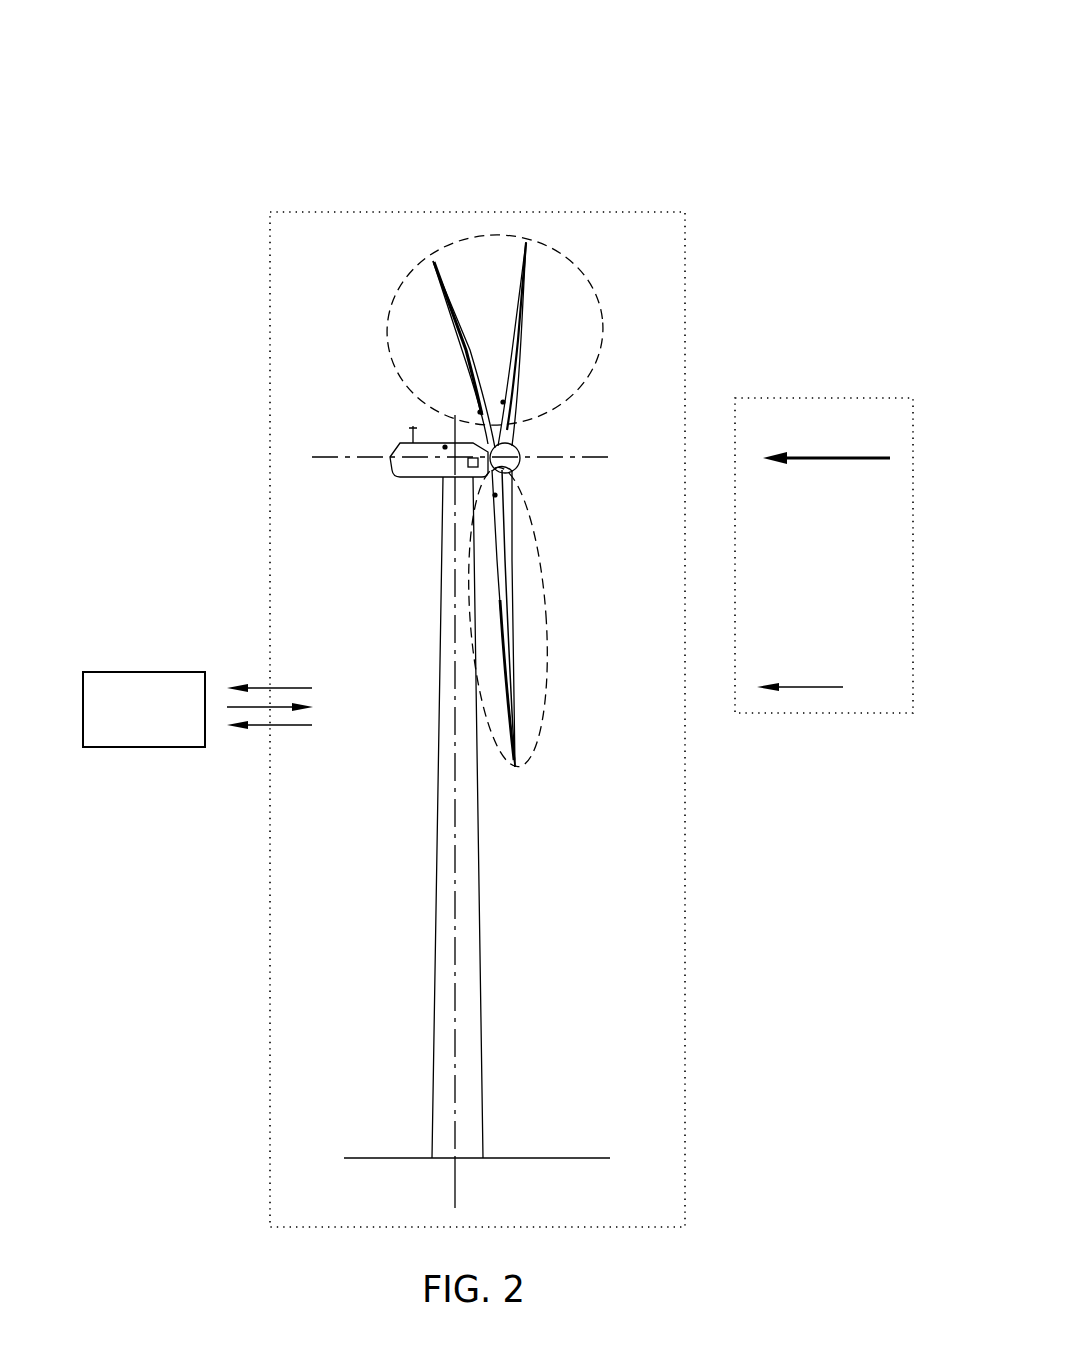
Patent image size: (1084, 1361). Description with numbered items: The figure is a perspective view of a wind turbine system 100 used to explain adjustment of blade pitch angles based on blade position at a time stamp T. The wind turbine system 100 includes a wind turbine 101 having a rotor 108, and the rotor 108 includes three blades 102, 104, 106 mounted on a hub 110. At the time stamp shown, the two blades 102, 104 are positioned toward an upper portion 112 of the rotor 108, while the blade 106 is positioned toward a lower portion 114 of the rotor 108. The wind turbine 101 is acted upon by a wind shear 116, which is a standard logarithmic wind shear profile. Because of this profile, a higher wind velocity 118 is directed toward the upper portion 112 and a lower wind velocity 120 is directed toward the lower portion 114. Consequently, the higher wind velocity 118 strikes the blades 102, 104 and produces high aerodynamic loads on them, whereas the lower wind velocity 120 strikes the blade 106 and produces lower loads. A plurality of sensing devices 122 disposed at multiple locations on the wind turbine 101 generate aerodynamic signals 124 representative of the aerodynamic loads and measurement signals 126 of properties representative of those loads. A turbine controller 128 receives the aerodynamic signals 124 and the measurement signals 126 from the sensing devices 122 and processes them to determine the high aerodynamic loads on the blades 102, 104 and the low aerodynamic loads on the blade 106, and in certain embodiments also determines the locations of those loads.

The wind turbine system 100 is at (748, 67).
The wind turbine 101 is at (687, 888).
The blade 102 is at (525, 317).
The blade 104 is at (458, 320).
The blade 106 is at (505, 548).
The rotor 108 is at (566, 418).
The hub 110 is at (518, 452).
The upper portion 112 is at (592, 282).
The lower portion 114 is at (547, 633).
The wind shear 116 is at (810, 397).
The higher wind velocity 118 is at (798, 457).
The lower wind velocity 120 is at (820, 686).
The sensing devices 122 is at (480, 412).
The aerodynamic signals 124 is at (300, 687).
The measurement signals 126 is at (300, 727).
The turbine controller 128 is at (142, 672).